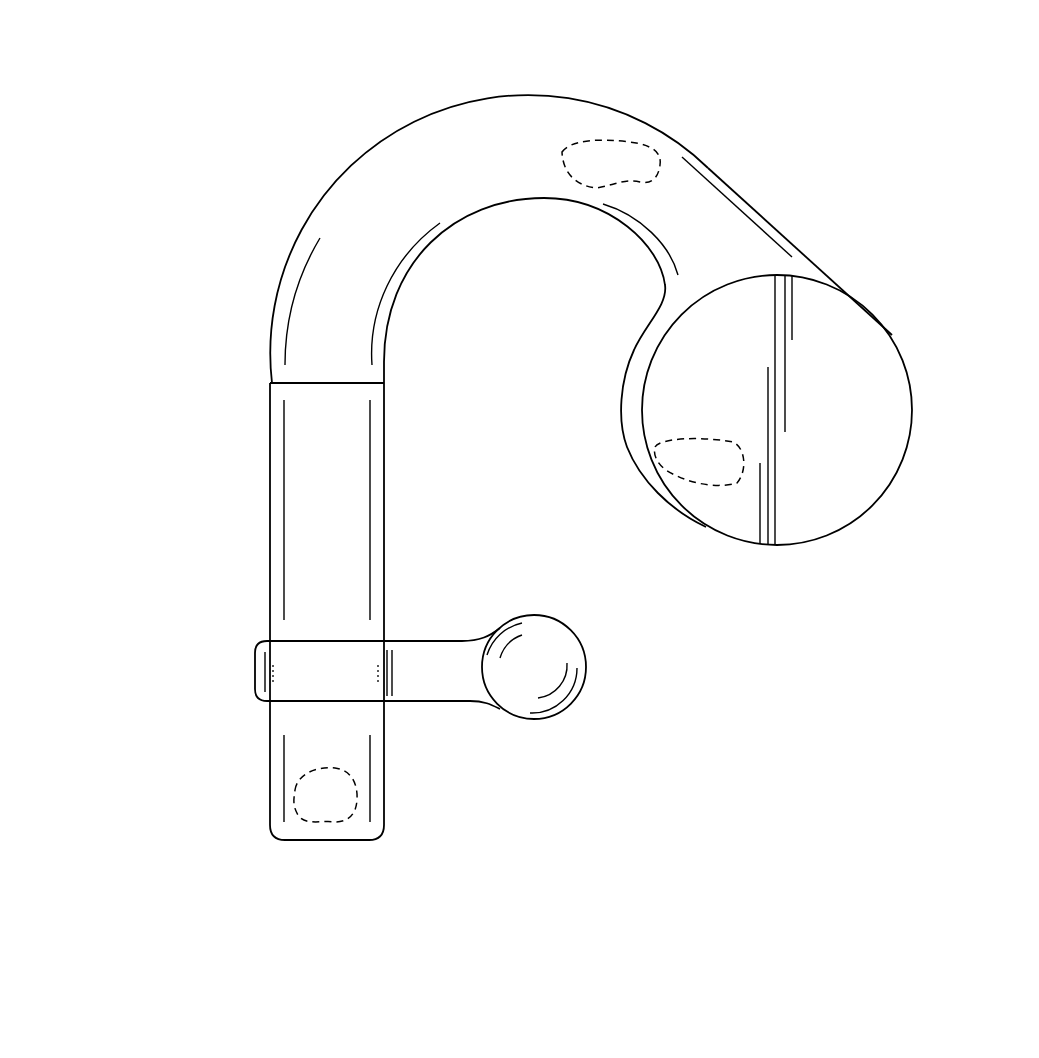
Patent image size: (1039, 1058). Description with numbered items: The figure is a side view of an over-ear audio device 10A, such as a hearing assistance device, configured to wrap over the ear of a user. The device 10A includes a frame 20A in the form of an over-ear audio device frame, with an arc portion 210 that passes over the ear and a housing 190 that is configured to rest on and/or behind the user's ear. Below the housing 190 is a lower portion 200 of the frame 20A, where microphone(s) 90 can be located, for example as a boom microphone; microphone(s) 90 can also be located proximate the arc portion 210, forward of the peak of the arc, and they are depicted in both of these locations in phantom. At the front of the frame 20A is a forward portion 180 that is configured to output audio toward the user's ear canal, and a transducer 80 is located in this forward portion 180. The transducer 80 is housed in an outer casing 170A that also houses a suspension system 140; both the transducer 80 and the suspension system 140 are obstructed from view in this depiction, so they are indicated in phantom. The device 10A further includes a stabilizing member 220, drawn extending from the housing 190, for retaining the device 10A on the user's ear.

The audio device 10A is at (188, 154).
The frame 20A is at (260, 330).
The housing 190 is at (269, 440).
The lower portion 200 is at (338, 843).
The arc portion 210 is at (492, 136).
The stabilizing member 220 is at (548, 645).
The suspension system 140 is at (606, 386).
The outer casing 170A is at (914, 332).
The forward portion 180 is at (866, 492).
The microphone(s) 90 is at (607, 160).
The transducer 80 is at (692, 470).